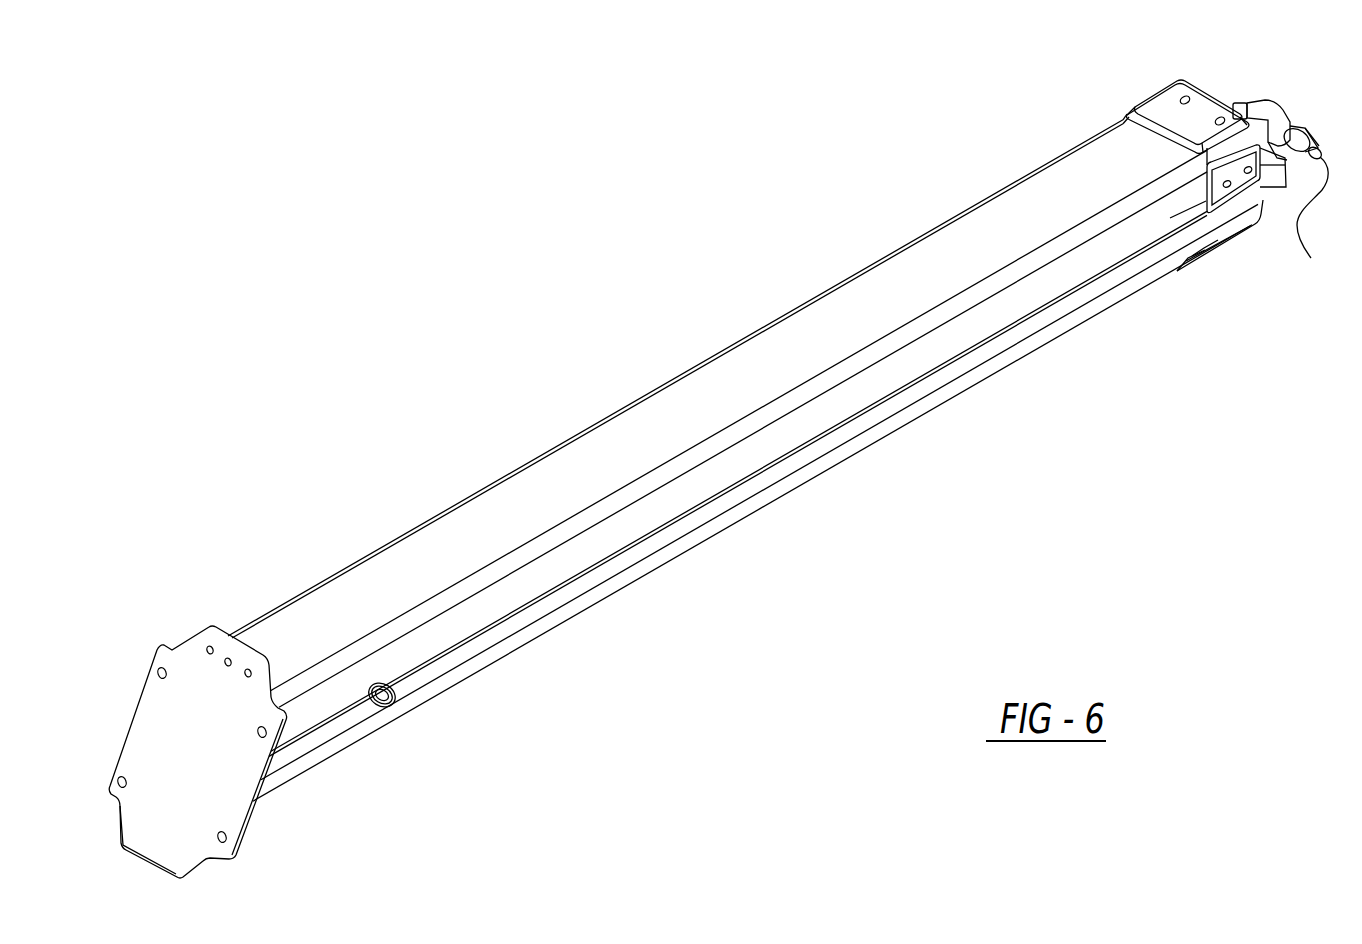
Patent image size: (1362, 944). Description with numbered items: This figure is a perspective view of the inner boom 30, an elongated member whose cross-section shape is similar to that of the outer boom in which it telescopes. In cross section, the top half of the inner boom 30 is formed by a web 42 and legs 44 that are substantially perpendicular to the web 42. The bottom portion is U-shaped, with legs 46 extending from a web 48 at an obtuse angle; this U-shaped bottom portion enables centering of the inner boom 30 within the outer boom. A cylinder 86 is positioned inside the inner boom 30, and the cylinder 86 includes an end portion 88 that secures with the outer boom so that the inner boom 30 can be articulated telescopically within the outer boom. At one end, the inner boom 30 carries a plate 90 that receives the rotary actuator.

The inner boom 30 is at (540, 298).
The web 42 is at (470, 559).
The legs 44 is at (505, 618).
The legs 46 is at (545, 608).
The web 48 is at (400, 716).
The cylinder 86 is at (1280, 100).
The end portion 88 is at (1316, 221).
The plate 90 is at (197, 684).